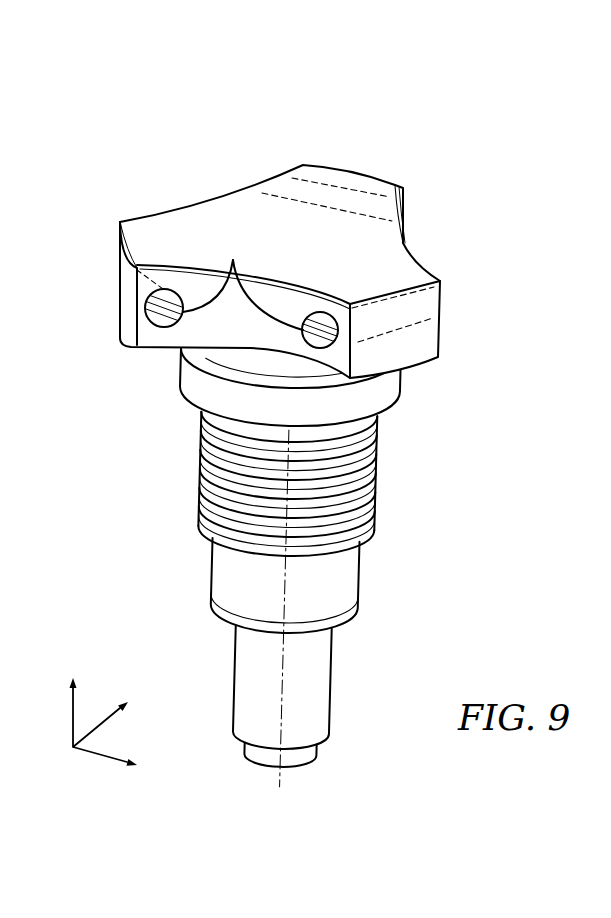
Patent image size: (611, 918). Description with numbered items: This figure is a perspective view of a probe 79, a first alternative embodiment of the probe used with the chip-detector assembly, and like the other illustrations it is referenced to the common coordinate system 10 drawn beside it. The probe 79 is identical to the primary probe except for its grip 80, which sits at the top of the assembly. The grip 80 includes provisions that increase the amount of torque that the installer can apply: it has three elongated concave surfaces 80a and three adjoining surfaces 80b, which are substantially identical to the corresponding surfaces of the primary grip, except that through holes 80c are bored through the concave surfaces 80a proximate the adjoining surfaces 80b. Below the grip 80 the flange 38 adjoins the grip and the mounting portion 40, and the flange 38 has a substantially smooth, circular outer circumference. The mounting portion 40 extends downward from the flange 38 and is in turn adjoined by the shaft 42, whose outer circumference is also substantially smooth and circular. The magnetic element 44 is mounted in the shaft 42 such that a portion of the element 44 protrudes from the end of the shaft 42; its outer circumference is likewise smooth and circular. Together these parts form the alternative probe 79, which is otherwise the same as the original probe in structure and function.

The coordinate system 10 is at (92, 753).
The flange 38 is at (420, 399).
The mounting portion 40 is at (397, 498).
The shaft 42 is at (383, 620).
The magnetic element 44 is at (346, 767).
The probe 79 is at (324, 239).
The grip 80 is at (324, 242).
The elongated concave surfaces 80a is at (220, 199).
The adjoining surfaces 80b is at (352, 167).
The through holes 80c is at (233, 262).